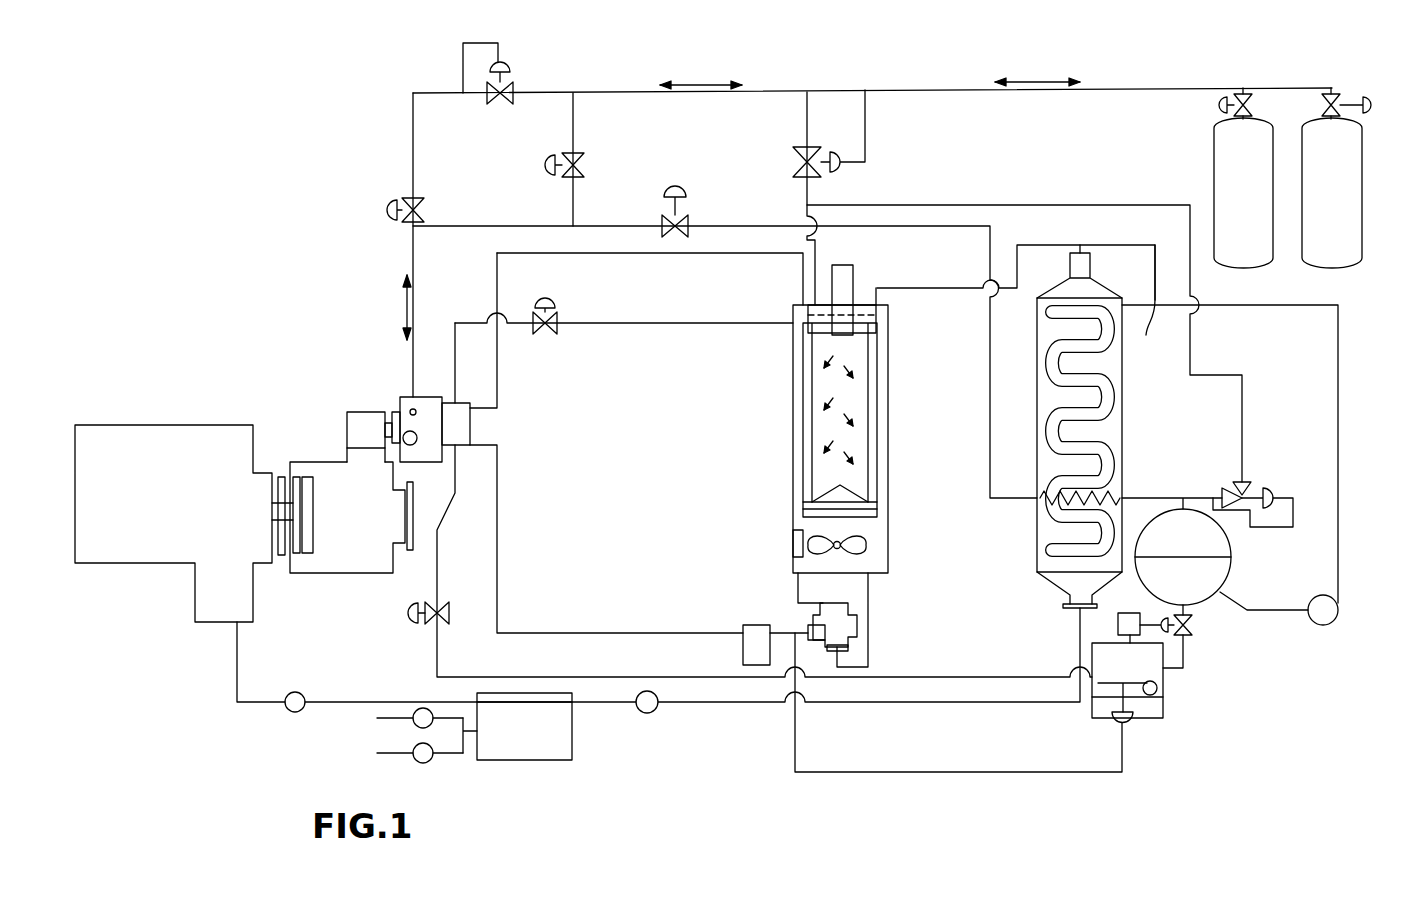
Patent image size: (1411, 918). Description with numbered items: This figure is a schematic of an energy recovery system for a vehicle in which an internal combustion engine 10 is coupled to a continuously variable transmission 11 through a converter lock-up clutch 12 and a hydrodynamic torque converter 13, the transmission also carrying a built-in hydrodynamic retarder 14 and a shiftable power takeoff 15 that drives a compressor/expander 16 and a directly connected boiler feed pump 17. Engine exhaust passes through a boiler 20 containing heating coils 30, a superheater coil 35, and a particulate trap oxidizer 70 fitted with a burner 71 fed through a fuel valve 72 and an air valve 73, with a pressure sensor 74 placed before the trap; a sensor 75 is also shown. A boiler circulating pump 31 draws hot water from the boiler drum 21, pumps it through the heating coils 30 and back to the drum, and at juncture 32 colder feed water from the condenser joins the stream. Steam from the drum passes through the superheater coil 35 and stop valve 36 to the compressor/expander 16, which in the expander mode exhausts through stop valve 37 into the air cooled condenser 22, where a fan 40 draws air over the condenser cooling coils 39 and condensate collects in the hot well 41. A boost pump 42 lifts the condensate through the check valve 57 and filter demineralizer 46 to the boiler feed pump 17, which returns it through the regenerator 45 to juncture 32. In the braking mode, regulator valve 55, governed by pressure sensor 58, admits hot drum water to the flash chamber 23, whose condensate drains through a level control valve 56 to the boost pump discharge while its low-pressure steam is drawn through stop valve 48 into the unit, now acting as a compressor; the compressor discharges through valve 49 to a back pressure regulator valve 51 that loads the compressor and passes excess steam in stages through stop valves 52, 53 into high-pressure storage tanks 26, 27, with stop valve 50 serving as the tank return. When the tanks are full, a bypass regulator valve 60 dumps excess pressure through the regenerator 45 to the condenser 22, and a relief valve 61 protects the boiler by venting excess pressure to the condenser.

The internal combustion engine 10 is at (172, 428).
The continuously variable transmission 11 is at (335, 540).
The converter lock-up clutch 12 is at (279, 476).
The hydrodynamic torque converter 13 is at (296, 476).
The hydrodynamic retarder 14 is at (306, 476).
The shiftable power takeoff 15 is at (356, 411).
The compressor/expander 16 is at (400, 395).
The boiler feed pump 17 is at (471, 432).
The boiler 20 is at (1122, 440).
The boiler drum 21 is at (1231, 572).
The condenser 22 is at (802, 400).
The flash chamber 23 is at (1163, 703).
The high-pressure storage tank 26 is at (1265, 243).
The high-pressure storage tank 27 is at (1363, 242).
The heating coils 30 is at (1116, 398).
The boiler circulating pump 31 is at (1338, 630).
The juncture 32 is at (1151, 309).
The superheater coil 35 is at (1046, 501).
The stop valve 36 is at (678, 212).
The stop valve 37 is at (559, 318).
The condenser cooling coils 39 is at (888, 385).
The fan 40 is at (865, 548).
The hot well 41 is at (803, 507).
The boost pump 42 is at (850, 628).
The regenerator 45 is at (862, 300).
The filter demineralizer 46 is at (750, 625).
The stop valve 48 is at (443, 622).
The valve 49 is at (385, 210).
The stop valve 50 is at (546, 164).
The regulator valve 51 is at (513, 90).
The stop valve 52 is at (1221, 96).
The stop valve 53 is at (1368, 96).
The regulator valve 55 is at (1197, 630).
The level control valve 56 is at (1130, 725).
The check valve 57 is at (838, 650).
The pressure sensor 58 is at (1132, 614).
The bypass regulator valve 60 is at (796, 165).
The relief valve 61 is at (1263, 496).
The particulate trap oxidizer 70 is at (572, 732).
The burner 71 is at (485, 738).
The fuel valve 72 is at (412, 720).
The air valve 73 is at (410, 756).
The pressure sensor 74 is at (288, 712).
The sensor 75 is at (650, 714).